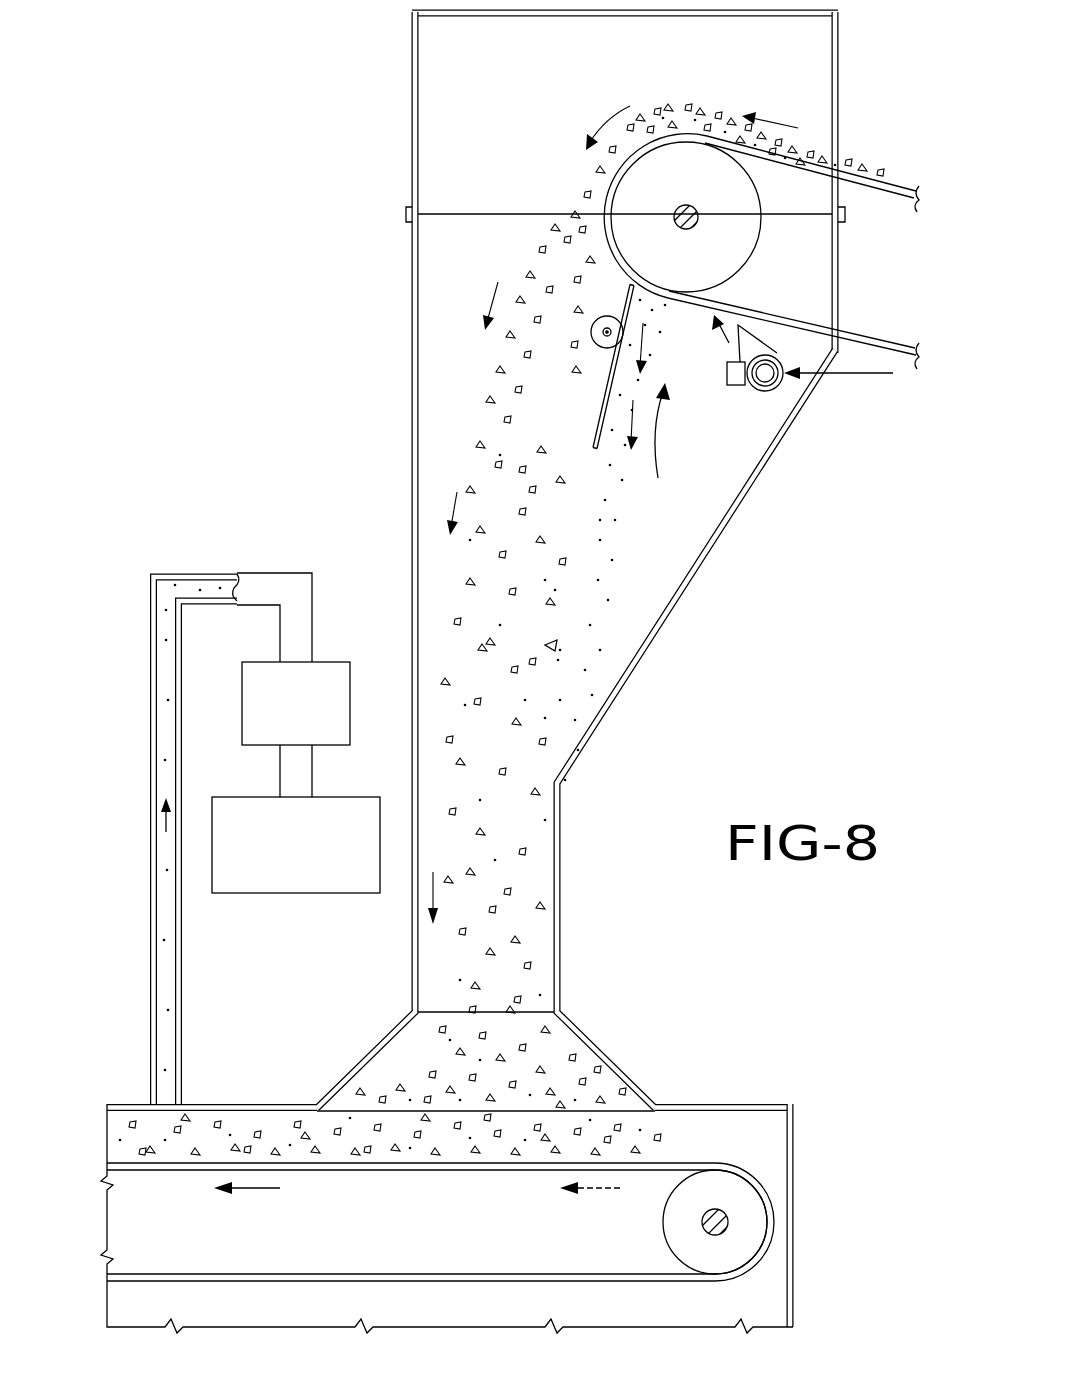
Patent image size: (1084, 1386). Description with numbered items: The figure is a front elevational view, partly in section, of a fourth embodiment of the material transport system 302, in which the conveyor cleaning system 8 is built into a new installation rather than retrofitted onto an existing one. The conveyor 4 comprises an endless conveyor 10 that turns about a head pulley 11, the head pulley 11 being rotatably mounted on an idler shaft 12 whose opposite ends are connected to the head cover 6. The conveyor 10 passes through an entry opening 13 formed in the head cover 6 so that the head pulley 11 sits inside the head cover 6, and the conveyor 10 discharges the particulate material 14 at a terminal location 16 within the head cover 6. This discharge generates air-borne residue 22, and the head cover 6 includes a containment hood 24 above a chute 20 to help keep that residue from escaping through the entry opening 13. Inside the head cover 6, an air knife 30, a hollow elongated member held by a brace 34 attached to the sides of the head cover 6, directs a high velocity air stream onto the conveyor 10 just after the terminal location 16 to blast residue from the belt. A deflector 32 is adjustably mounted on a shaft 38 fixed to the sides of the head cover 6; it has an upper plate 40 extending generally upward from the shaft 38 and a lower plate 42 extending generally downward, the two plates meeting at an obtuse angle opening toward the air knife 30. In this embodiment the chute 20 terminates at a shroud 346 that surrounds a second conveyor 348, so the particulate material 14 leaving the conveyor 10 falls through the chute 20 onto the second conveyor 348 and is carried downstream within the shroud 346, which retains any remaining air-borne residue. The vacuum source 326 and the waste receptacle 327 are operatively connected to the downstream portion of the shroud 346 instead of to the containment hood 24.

The material transport system 302 is at (519, 33).
The head cover 6 is at (431, 560).
The containment hood 24 is at (878, 182).
The conveyor 4 is at (783, 216).
The terminal location 16 is at (625, 181).
The idler shaft 12 is at (739, 232).
The head pulley 11 is at (712, 222).
The upper plate 40 is at (646, 264).
The entry opening 13 is at (739, 687).
The conveyor 10 is at (806, 330).
The shaft 38 is at (579, 331).
The deflector 32 is at (550, 388).
The lower plate 42 is at (579, 367).
The brace 34 is at (747, 381).
The air knife 30 is at (820, 402).
The conveyor cleaning system 8 is at (689, 412).
The chute 20 is at (654, 538).
The air-borne residue 22 is at (661, 623).
The particulate material 14 is at (630, 668).
The vacuum source 326 is at (279, 840).
The waste receptacle 327 is at (307, 828).
The shroud 346 is at (449, 1192).
The second conveyor 348 is at (440, 1203).